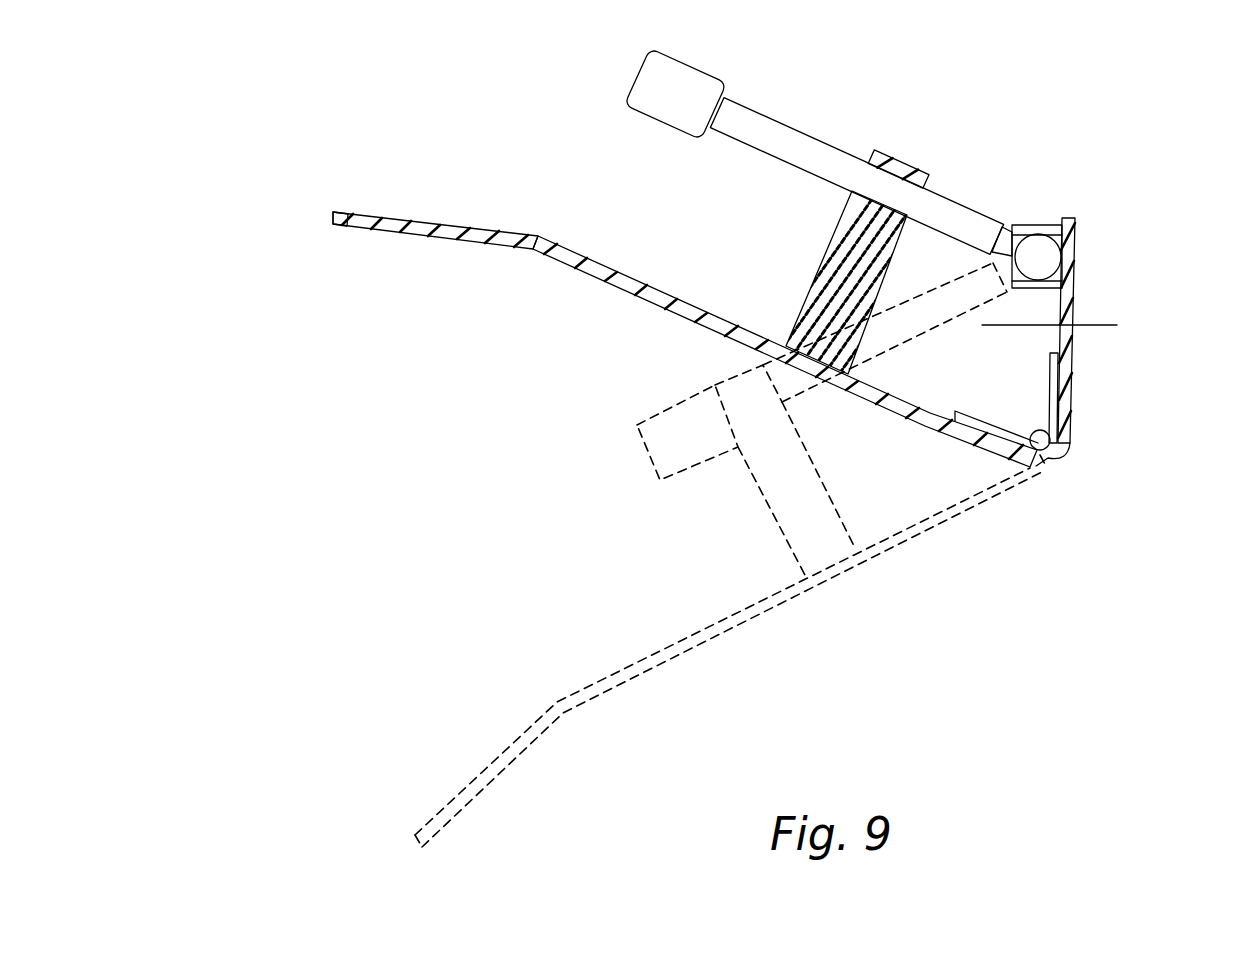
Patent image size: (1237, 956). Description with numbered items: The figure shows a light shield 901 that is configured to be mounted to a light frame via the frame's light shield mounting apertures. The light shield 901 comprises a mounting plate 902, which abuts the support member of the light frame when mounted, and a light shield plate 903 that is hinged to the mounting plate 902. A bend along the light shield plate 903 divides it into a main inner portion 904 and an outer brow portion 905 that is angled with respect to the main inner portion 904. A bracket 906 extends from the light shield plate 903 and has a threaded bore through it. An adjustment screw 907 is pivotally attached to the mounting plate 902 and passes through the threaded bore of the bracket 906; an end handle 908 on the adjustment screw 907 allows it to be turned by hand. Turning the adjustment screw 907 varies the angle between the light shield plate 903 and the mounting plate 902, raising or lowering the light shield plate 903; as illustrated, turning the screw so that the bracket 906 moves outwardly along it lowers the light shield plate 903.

The light shield 901 is at (1122, 203).
The mounting plate 902 is at (1075, 307).
The light shield plate 903 is at (332, 218).
The main inner portion 904 is at (582, 277).
The outer brow portion 905 is at (427, 217).
The bracket 906 is at (913, 170).
The adjustment screw 907 is at (810, 152).
The end handle 908 is at (670, 113).